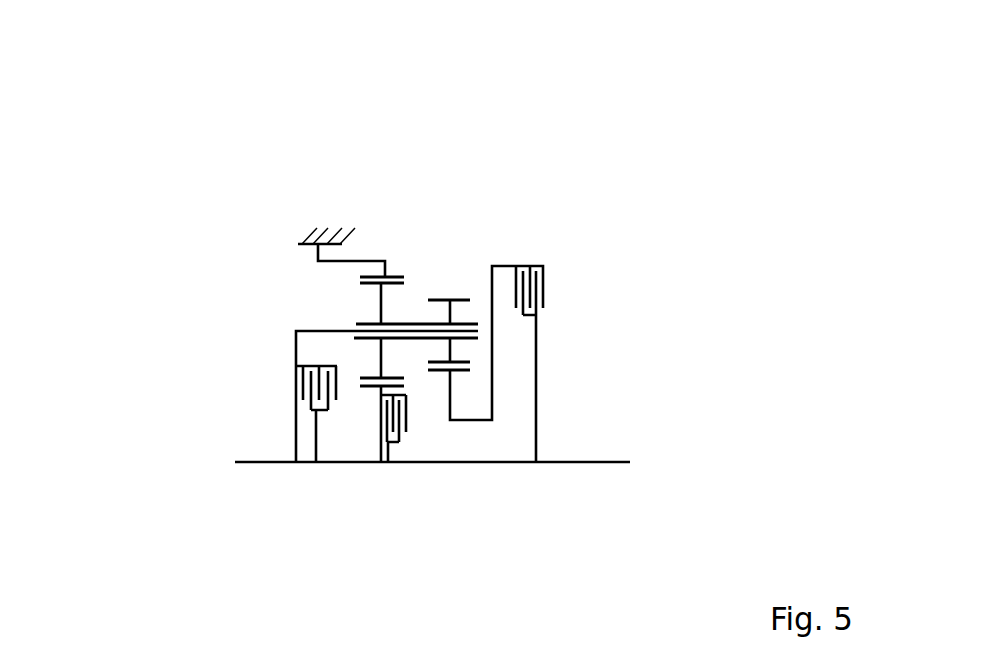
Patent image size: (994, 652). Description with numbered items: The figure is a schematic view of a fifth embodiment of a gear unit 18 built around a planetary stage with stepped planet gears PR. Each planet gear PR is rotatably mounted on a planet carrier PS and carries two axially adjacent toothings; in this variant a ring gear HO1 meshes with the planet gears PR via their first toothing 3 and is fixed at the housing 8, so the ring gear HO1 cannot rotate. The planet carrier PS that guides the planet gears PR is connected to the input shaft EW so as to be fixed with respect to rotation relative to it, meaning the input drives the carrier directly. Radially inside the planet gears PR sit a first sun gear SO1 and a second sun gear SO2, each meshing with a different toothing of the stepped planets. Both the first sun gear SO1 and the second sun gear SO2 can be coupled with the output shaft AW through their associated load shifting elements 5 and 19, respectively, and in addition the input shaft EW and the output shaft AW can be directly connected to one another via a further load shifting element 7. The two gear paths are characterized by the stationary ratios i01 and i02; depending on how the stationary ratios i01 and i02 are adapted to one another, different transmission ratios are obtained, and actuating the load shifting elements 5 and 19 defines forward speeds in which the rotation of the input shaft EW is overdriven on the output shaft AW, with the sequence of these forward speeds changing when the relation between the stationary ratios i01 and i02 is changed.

The gear unit 18 is at (249, 220).
The housing 8 is at (334, 232).
The ring gear HO1 is at (396, 276).
The load shifting element 5 is at (529, 264).
The first toothing 3 is at (372, 287).
The planet gears PR is at (367, 323).
The planet carrier PS is at (325, 333).
The input shaft EW is at (270, 462).
The output shaft AW is at (585, 460).
The load shifting element 7 is at (322, 415).
The first sun gear SO1 is at (368, 388).
The load shifting element 19 is at (396, 447).
The second sun gear SO2 is at (460, 372).
The stationary ratio i01 is at (407, 158).
The stationary ratio i02 is at (473, 158).